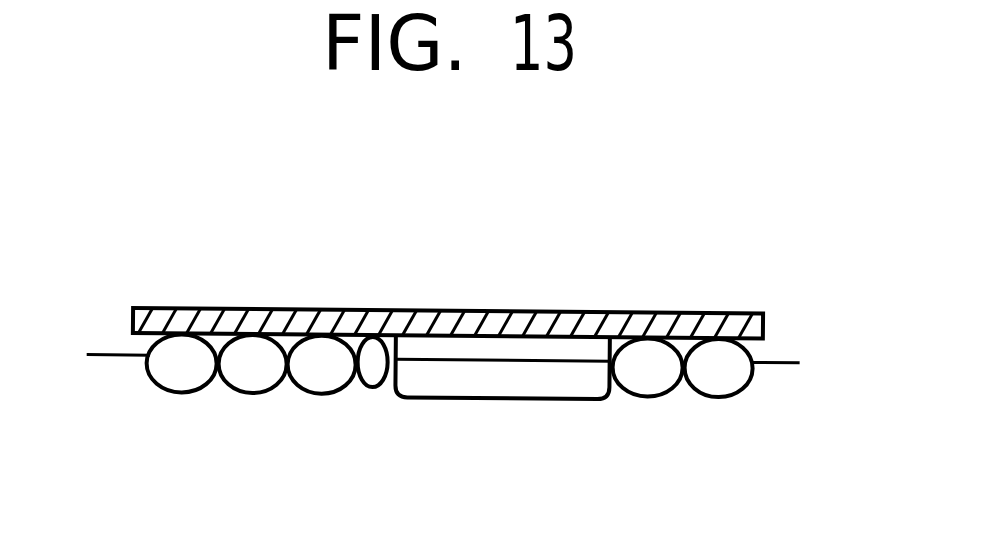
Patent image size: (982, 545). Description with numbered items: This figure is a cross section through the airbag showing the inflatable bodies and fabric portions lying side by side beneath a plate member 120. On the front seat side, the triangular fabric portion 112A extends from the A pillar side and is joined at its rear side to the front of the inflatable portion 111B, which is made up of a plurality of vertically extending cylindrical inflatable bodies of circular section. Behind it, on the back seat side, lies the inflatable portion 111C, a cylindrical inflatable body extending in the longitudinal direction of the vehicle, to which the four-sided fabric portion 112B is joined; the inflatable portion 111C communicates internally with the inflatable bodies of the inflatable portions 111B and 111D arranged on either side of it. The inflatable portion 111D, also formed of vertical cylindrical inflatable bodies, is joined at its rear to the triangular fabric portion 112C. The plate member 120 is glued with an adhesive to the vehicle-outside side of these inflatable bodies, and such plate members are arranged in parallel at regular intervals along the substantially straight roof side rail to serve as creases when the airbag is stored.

The plate member 120 is at (680, 318).
The inflatable portion 111B is at (263, 396).
The inflatable portion 111C is at (448, 397).
The inflatable portion 111D is at (662, 397).
The fabric portion 112A is at (110, 357).
The fabric portion 112B is at (548, 360).
The fabric portion 112C is at (775, 364).